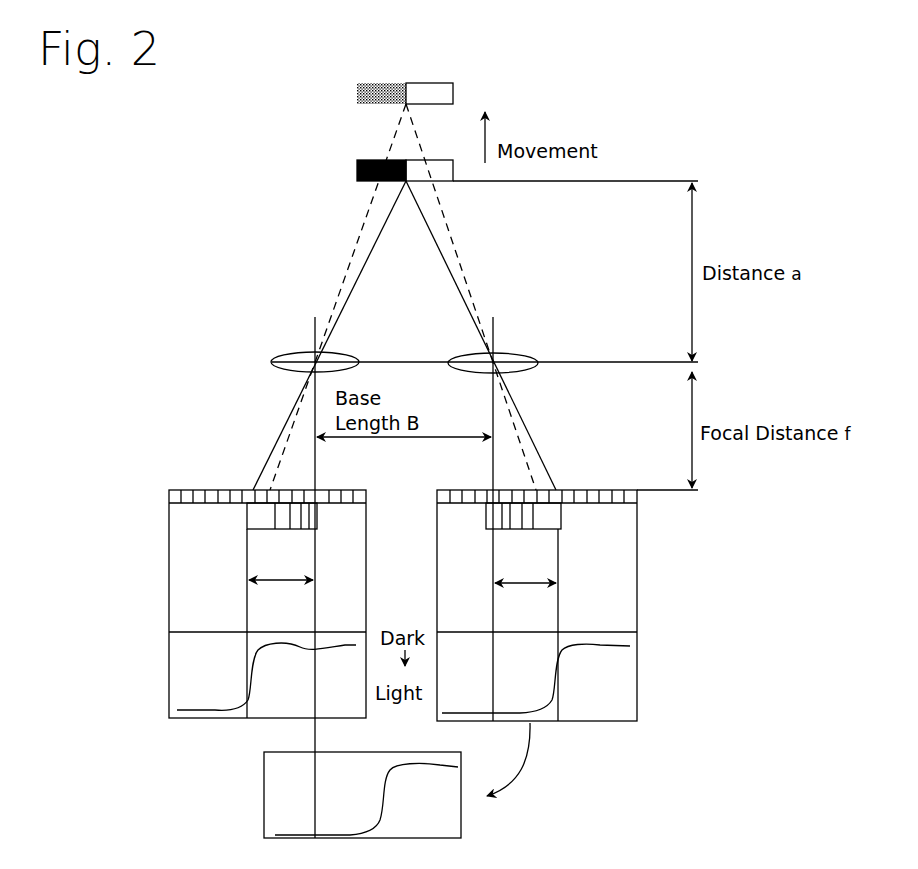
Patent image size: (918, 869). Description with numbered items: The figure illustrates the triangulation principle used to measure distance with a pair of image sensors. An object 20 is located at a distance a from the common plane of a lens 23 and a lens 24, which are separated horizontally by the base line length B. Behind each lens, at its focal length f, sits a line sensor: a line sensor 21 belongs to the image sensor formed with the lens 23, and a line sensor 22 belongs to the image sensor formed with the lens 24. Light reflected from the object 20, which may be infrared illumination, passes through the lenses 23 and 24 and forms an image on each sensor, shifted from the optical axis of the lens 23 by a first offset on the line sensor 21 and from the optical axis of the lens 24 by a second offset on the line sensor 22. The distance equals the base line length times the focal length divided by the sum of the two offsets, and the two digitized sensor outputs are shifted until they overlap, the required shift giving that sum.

The object 20 is at (357, 170).
The line sensor 21 is at (168, 498).
The line sensor 22 is at (640, 494).
The lens 23 is at (285, 354).
The lens 24 is at (522, 352).